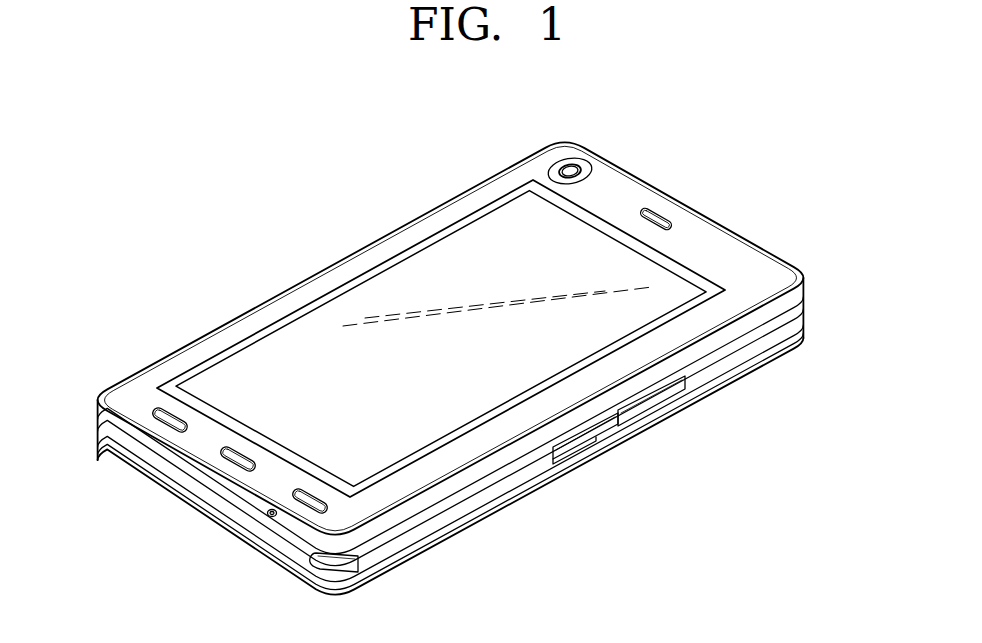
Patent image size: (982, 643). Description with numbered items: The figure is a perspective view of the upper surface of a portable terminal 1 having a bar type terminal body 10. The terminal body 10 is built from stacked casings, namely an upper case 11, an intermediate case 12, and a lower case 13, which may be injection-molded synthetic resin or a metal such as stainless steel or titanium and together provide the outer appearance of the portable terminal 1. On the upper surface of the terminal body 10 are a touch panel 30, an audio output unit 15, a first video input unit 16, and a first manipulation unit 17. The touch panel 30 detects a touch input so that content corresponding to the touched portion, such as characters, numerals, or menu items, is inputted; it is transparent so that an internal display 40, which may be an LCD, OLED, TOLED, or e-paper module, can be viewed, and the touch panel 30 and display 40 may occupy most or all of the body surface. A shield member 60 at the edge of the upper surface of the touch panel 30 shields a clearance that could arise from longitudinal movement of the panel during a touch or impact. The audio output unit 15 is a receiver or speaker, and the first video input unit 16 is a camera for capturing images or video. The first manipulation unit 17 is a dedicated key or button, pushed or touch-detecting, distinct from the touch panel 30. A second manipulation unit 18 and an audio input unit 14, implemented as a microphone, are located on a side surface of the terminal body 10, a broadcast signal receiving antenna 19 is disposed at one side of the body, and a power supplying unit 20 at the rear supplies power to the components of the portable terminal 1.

The portable terminal 1 is at (327, 255).
The terminal body 10 is at (497, 436).
The upper case 11 is at (803, 290).
The intermediate case 12 is at (803, 314).
The lower case 13 is at (479, 464).
The audio input unit 14 is at (268, 517).
The audio output unit 15 is at (659, 221).
The first video input unit 16 is at (574, 171).
The first manipulation unit 17 is at (160, 412).
The second manipulation unit 18 is at (602, 432).
The broadcast signal receiving antenna 19 is at (335, 565).
The power supplying unit 20 is at (477, 518).
The touch panel 30 is at (507, 218).
The display 40 is at (470, 290).
The shield member 60 is at (240, 353).